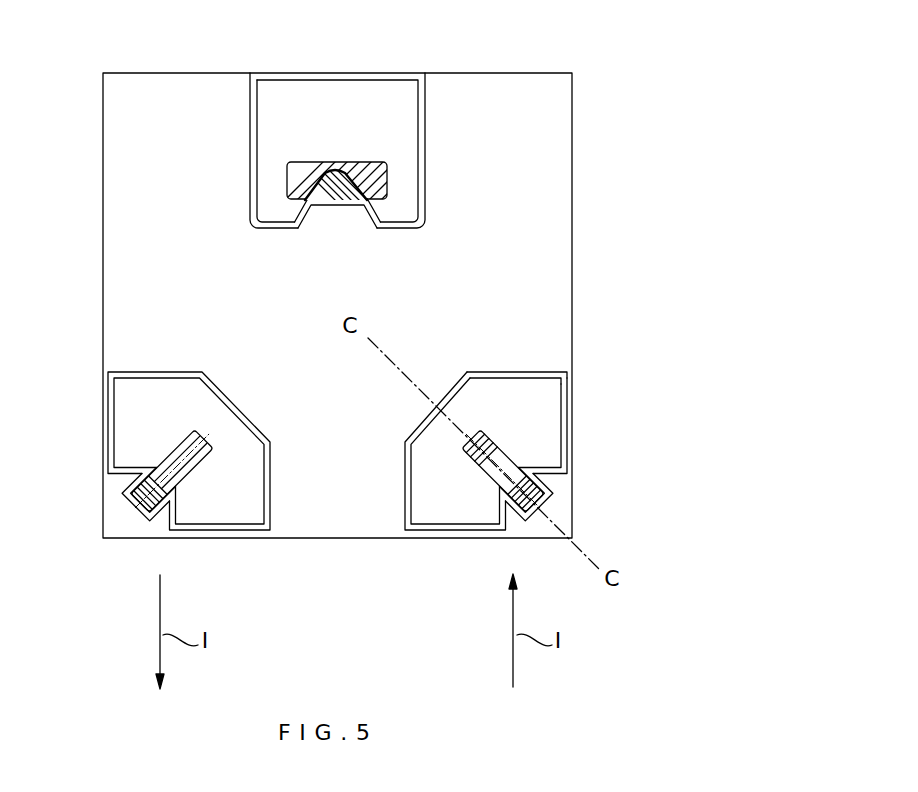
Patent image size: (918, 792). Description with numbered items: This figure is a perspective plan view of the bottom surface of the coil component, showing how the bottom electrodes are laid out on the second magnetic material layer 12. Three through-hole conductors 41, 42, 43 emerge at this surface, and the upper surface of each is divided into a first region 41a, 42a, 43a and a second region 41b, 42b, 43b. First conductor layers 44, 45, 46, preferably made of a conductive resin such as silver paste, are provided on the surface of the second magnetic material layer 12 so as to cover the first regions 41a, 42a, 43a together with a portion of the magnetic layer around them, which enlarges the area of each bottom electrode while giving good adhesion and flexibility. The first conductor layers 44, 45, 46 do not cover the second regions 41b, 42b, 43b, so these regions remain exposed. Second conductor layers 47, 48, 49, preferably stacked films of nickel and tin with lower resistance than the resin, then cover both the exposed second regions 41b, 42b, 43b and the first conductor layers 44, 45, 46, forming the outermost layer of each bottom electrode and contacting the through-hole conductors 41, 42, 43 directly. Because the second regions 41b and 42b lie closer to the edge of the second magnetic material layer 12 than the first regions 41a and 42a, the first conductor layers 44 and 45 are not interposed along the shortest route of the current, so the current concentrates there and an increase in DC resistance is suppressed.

The second magnetic material layer 12 is at (568, 167).
The through-hole conductor 41 is at (517, 437).
The first region 41a is at (507, 467).
The second region 41b is at (557, 490).
The through-hole conductor 42 is at (172, 443).
The first region 42a is at (205, 455).
The second region 42b is at (130, 497).
The through-hole conductor 43 is at (305, 162).
The first region 43a is at (380, 166).
The second region 43b is at (343, 190).
The first conductor layer 44 is at (552, 378).
The first conductor layer 45 is at (146, 521).
The first conductor layer 46 is at (308, 222).
The second conductor layer 47 is at (522, 372).
The second conductor layer 48 is at (140, 372).
The second conductor layer 49 is at (425, 120).